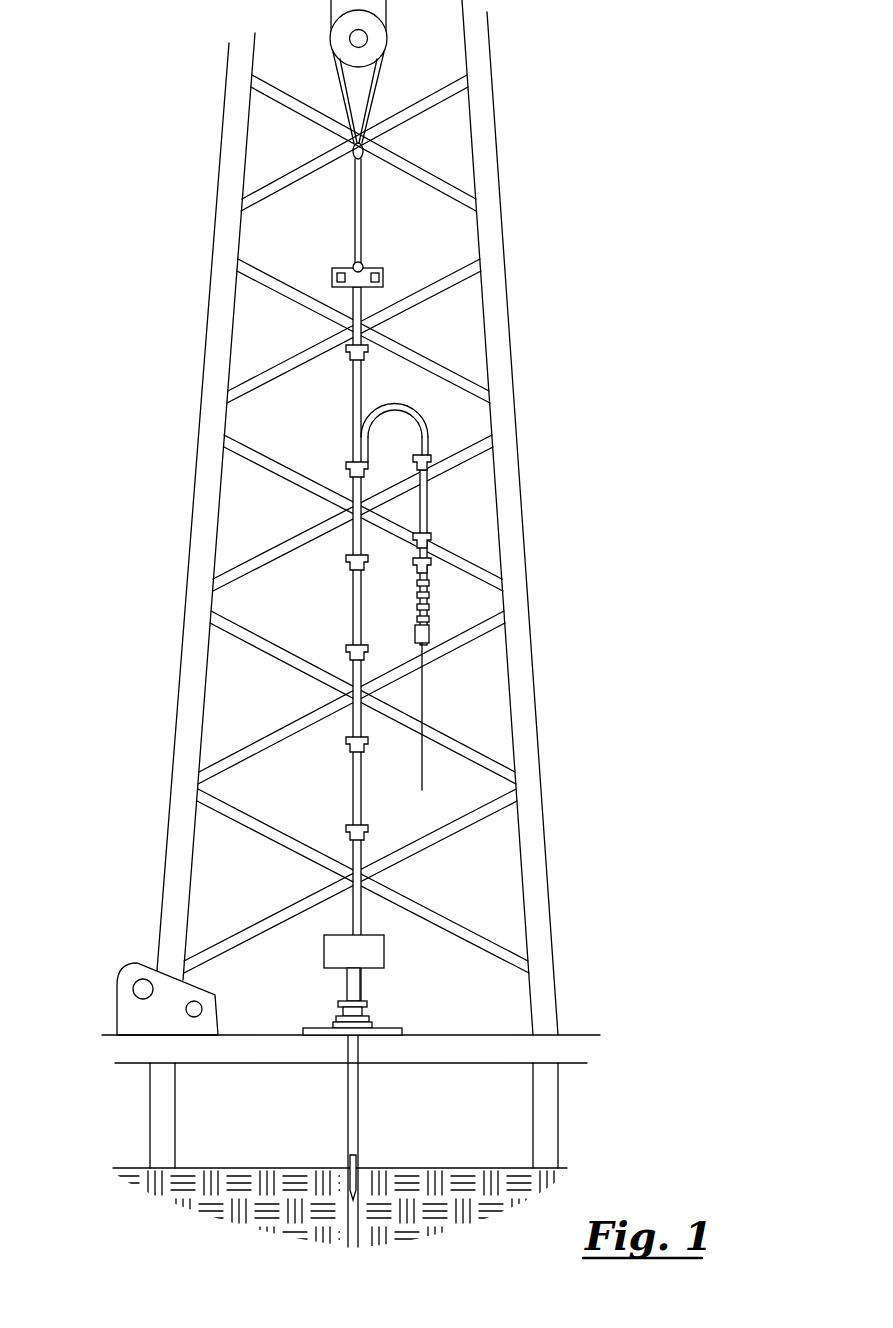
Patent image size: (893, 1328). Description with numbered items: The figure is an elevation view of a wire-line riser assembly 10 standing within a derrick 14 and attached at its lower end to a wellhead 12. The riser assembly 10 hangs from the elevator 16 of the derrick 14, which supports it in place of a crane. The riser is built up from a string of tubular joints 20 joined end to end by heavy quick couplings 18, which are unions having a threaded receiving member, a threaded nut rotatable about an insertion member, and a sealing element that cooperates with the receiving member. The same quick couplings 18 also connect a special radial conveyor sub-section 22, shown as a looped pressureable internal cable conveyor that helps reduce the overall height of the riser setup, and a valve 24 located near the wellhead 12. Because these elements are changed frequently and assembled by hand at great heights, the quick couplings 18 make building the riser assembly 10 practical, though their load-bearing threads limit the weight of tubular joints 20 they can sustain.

The wire-line riser assembly 10 is at (313, 597).
The wellhead 12 is at (373, 1027).
The derrick 14 is at (518, 633).
The elevator 16 is at (372, 267).
The quick couplings 18 is at (368, 350).
The tubular joints 20 is at (365, 318).
The radial conveyor sub-sections 22 is at (352, 392).
The valves 24 is at (368, 948).